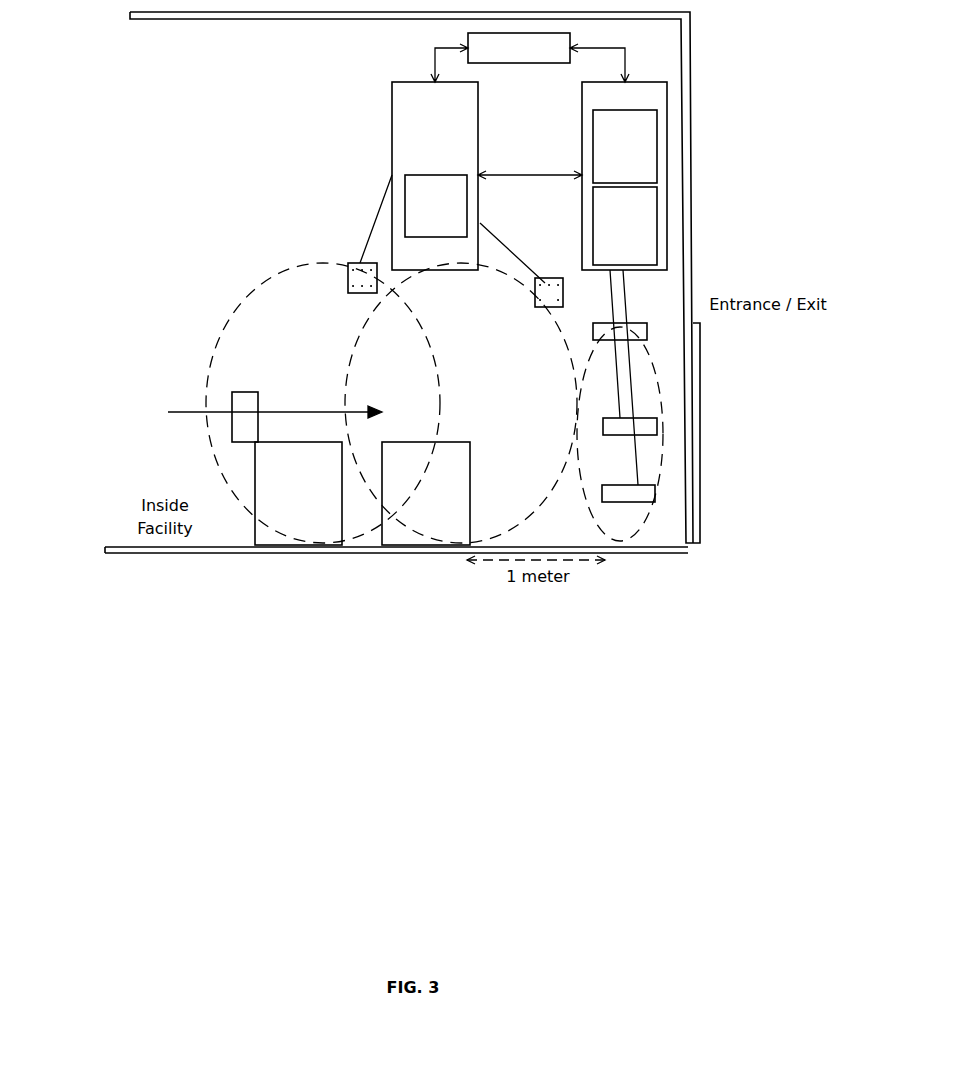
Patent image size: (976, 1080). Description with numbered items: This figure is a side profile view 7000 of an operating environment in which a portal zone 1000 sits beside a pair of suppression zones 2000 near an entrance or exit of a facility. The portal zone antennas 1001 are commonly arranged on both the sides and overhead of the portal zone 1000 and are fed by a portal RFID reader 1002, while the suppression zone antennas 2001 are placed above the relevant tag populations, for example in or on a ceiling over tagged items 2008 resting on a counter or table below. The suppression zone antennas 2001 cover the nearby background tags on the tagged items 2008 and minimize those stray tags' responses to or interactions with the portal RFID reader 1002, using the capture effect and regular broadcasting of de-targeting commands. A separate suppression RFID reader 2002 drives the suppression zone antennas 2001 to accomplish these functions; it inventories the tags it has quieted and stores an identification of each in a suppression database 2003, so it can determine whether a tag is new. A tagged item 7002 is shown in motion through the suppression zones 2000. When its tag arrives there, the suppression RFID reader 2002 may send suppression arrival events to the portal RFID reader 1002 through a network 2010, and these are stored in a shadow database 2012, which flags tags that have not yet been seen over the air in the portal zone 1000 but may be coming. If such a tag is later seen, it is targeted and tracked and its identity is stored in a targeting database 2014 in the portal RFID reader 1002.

The portal zone 1000 is at (645, 522).
The portal zone antennas 1001 is at (655, 493).
The portal RFID reader 1002 is at (580, 232).
The suppression zones 2000 is at (345, 383).
The suppression zone antennas 2001 is at (377, 275).
The suppression RFID reader 2002 is at (392, 140).
The suppression database 2003 is at (452, 175).
The tagged items 2008 is at (362, 493).
The network 2010 is at (520, 63).
The shadow database 2012 is at (625, 146).
The targeting database 2014 is at (625, 226).
The profile view 7000 is at (392, 664).
The tagged item 7002 is at (230, 430).